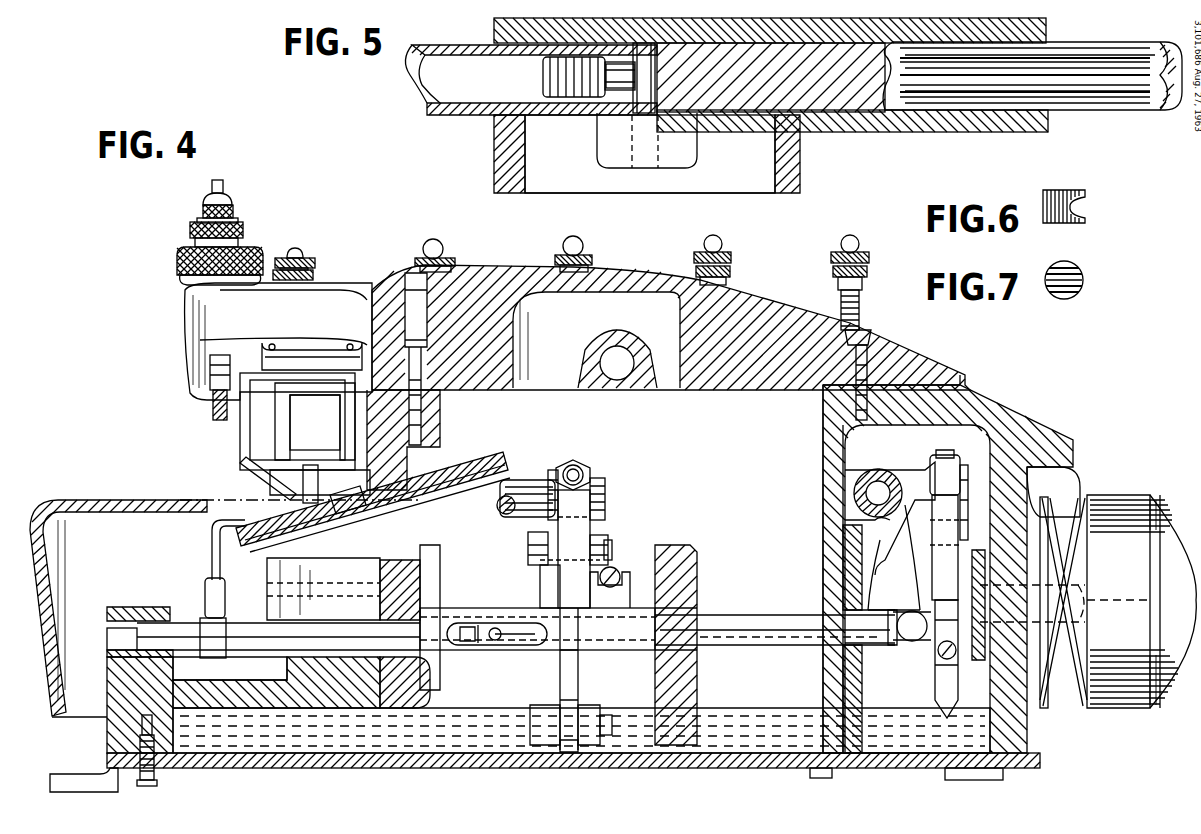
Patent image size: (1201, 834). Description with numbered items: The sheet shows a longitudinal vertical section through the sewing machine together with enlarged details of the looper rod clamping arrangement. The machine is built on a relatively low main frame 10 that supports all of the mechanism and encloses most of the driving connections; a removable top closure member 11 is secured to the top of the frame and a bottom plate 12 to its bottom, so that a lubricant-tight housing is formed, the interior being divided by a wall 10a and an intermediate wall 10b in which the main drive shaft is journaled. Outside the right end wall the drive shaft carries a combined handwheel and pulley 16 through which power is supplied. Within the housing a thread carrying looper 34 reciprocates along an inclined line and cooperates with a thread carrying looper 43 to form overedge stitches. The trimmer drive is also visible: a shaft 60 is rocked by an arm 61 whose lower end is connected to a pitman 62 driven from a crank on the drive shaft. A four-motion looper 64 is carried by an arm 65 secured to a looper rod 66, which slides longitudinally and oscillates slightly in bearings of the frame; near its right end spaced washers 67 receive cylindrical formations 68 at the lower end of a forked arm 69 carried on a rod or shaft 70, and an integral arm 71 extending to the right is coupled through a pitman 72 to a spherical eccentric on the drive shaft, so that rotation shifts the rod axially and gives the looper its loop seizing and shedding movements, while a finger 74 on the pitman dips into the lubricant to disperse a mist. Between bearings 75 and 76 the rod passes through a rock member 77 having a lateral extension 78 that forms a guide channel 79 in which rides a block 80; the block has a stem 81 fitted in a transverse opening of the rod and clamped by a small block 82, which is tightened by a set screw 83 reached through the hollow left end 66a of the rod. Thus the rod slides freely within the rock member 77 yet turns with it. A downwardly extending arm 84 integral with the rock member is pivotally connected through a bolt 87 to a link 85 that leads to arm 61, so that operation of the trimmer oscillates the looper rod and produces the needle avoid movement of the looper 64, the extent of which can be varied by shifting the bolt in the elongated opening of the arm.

In FIG. 4, the main frame 10 is at (1058, 448).
In FIG. 4, the wall 10a is at (823, 455).
In FIG. 4, the intermediate wall 10b is at (690, 568).
In FIG. 4, the top closure member 11 is at (935, 363).
In FIG. 4, the bottom plate 12 is at (1040, 762).
In FIG. 4, the combined handwheel and pulley 16 is at (1110, 500).
In FIG. 4, the thread carrying looper 34 is at (290, 522).
In FIG. 4, the thread carrying looper 43 is at (255, 484).
In FIG. 4, the shaft 60 is at (528, 480).
In FIG. 4, the arm 61 is at (564, 511).
In FIG. 4, the pitman 62 is at (630, 570).
In FIG. 4, the four-motion looper 64 is at (212, 545).
In FIG. 4, the arm 65 is at (218, 606).
In FIG. 5, the looper rod 66 is at (1085, 52).
In FIG. 4, the looper rod 66 is at (236, 640).
In FIG. 5, the hollow left end 66a is at (450, 86).
In FIG. 4, the spaced washers 67 is at (897, 648).
In FIG. 4, the cylindrical formations 68 is at (903, 636).
In FIG. 4, the forked arm 69 is at (898, 530).
In FIG. 4, the rod or shaft 70 is at (882, 470).
In FIG. 4, the arm 71 is at (905, 472).
In FIG. 4, the pitman 72 is at (949, 525).
In FIG. 4, the finger 74 is at (948, 690).
In FIG. 4, the bearing 75 is at (425, 668).
In FIG. 4, the bearing 76 is at (690, 600).
In FIG. 5, the rock member 77 is at (918, 132).
In FIG. 4, the rock member 77 is at (478, 608).
In FIG. 5, the lateral extension 78 is at (800, 170).
In FIG. 5, the guide channel 79 is at (738, 180).
In FIG. 4, the guide channel 79 is at (525, 645).
In FIG. 5, the block 80 is at (673, 168).
In FIG. 4, the block 80 is at (505, 645).
In FIG. 5, the stem 81 is at (630, 113).
In FIG. 5, the small block 82 is at (622, 90).
In FIG. 6, the small block 82 is at (1060, 192).
In FIG. 7, the small block 82 is at (1074, 270).
In FIG. 5, the set screw 83 is at (543, 80).
In FIG. 4, the arm 84 is at (578, 682).
In FIG. 4, the link 85 is at (548, 586).
In FIG. 4, the bolt 87 is at (600, 710).